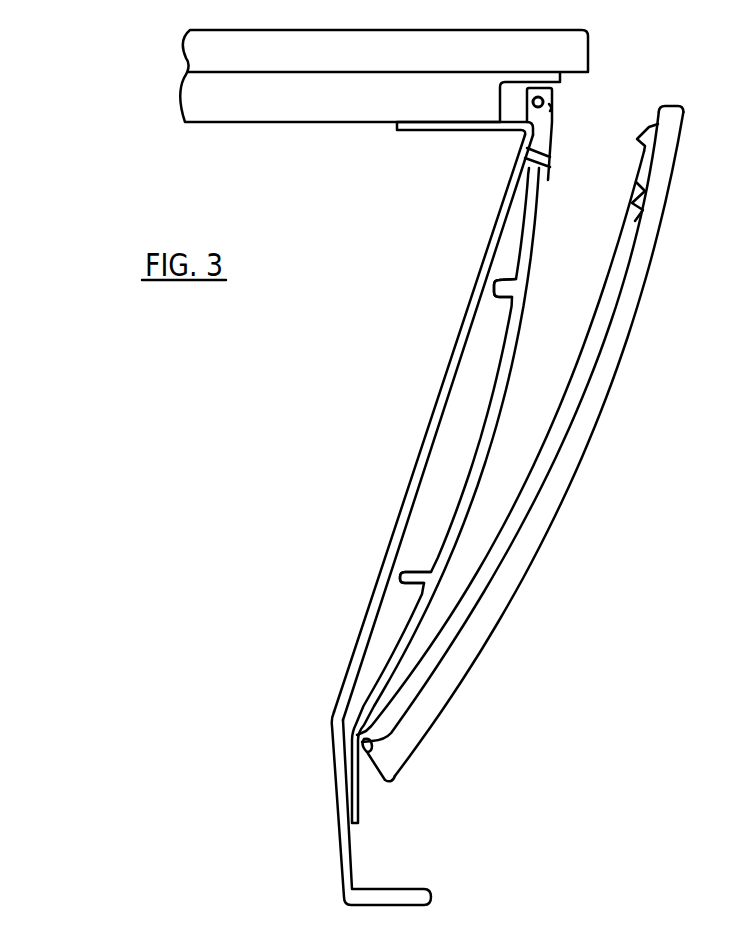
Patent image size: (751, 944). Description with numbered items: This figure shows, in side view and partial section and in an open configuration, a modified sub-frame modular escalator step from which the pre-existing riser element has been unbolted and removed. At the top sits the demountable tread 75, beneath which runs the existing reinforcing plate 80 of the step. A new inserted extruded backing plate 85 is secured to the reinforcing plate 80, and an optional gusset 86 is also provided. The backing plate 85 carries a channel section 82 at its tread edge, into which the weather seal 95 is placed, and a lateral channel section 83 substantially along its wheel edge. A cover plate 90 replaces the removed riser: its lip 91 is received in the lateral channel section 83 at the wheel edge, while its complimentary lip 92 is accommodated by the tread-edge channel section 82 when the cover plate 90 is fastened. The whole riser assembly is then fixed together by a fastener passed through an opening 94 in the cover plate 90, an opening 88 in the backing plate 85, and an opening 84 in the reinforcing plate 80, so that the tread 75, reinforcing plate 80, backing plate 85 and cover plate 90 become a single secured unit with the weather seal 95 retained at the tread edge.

The demountable tread 75 is at (196, 60).
The reinforcing plate 80 is at (430, 417).
The channel section 82 is at (552, 105).
The lateral channel section 83 is at (340, 740).
The opening 84 is at (520, 148).
The extruded backing plate 85 is at (468, 478).
The gusset 86 is at (480, 336).
The opening 88 is at (546, 172).
The cover plate 90 is at (515, 592).
The lip 91 is at (368, 756).
The complimentary lip 92 is at (640, 135).
The opening 94 is at (643, 193).
The weather seal 95 is at (549, 104).